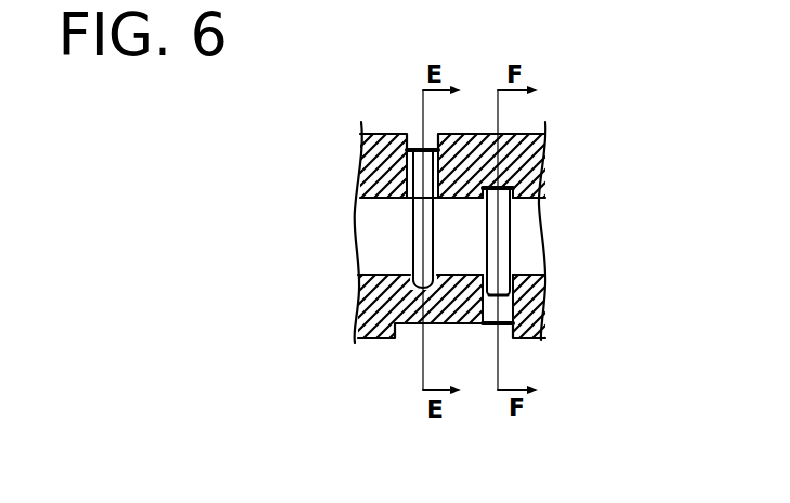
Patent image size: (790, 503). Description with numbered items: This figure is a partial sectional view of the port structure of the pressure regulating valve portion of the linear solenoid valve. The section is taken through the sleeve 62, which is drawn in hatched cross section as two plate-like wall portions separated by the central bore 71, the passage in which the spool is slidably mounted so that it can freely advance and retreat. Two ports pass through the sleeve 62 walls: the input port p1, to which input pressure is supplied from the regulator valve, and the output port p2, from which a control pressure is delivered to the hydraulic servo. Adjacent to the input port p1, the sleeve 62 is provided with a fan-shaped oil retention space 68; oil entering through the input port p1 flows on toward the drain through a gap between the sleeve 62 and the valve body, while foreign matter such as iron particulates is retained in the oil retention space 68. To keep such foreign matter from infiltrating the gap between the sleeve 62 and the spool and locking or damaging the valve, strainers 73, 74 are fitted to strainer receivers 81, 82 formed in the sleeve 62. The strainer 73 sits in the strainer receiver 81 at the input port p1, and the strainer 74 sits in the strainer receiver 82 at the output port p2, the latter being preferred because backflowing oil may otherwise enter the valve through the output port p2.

The sleeve 62 is at (573, 153).
The oil retention space 68 is at (403, 329).
The central bore 71 is at (532, 236).
The strainer 73 is at (513, 339).
The strainer 74 is at (407, 138).
The strainer receiver 81 is at (490, 328).
The strainer receiver 82 is at (437, 136).
The input port p1 is at (500, 298).
The output port p2 is at (411, 172).